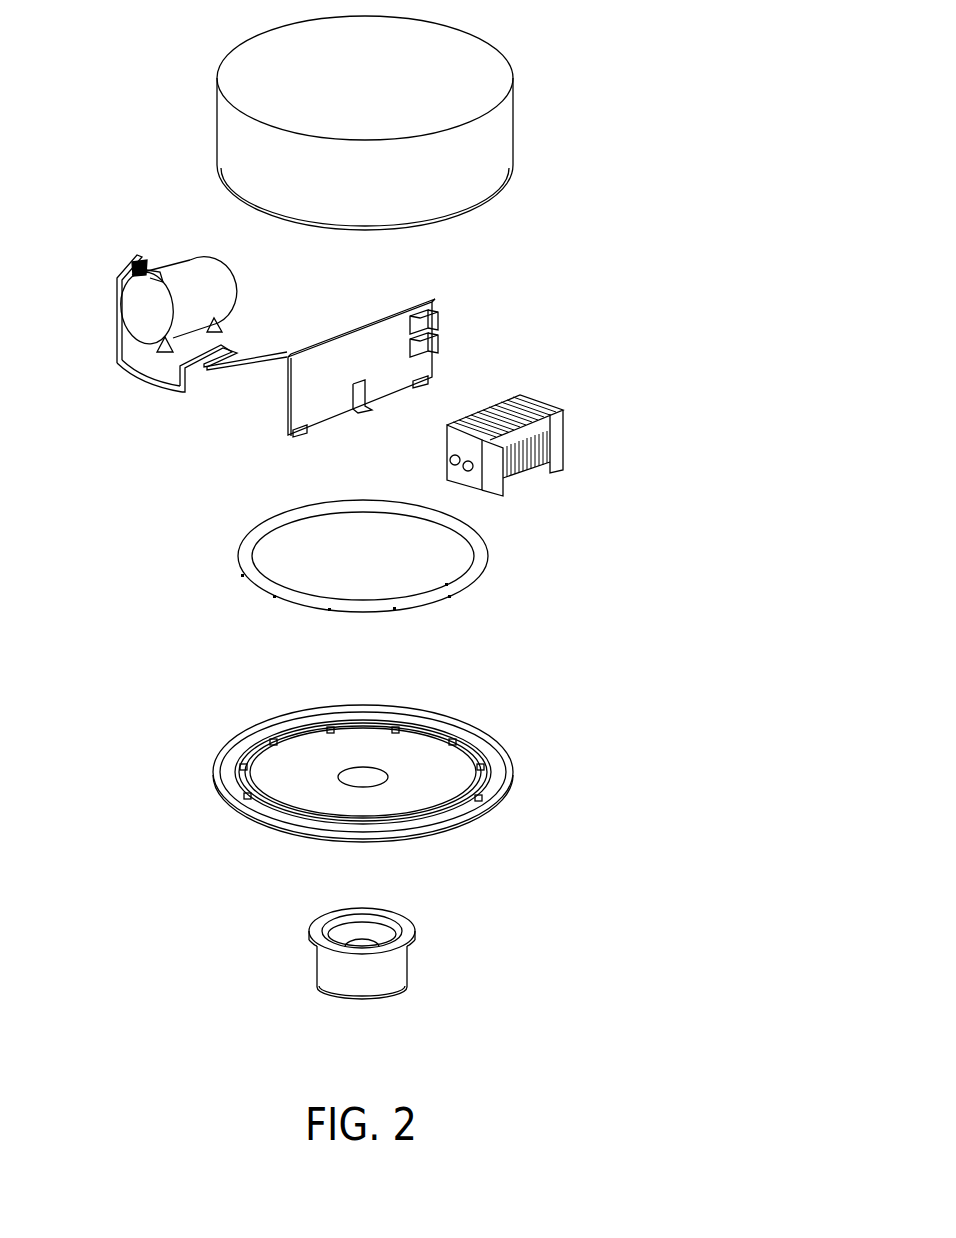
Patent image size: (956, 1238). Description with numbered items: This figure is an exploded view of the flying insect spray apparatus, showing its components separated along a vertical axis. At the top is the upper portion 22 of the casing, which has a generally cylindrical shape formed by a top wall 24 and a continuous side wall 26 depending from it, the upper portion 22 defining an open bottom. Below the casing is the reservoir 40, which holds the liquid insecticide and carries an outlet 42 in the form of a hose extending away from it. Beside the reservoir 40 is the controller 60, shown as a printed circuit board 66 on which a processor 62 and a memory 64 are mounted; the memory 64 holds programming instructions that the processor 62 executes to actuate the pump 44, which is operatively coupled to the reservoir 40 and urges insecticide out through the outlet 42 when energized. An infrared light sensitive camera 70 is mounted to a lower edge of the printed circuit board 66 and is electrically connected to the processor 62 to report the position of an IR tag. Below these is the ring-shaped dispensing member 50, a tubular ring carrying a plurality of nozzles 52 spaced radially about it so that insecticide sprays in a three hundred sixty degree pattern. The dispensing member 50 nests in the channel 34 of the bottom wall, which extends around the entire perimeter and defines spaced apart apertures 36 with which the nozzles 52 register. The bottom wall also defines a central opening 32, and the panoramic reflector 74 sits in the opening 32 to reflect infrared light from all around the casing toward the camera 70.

The upper portion 22 is at (430, 121).
The top wall 24 is at (390, 76).
The side wall 26 is at (503, 160).
The reservoir 40 is at (147, 282).
The outlet 42 is at (128, 270).
The controller 60 is at (418, 344).
The printed circuit board 66 is at (361, 364).
The processor 62 is at (439, 320).
The memory 64 is at (439, 345).
The infrared light sensitive camera 70 is at (392, 409).
The pump 44 is at (563, 417).
The dispensing member 50 is at (329, 579).
The nozzles 52 is at (352, 616).
The opening 32 is at (380, 786).
The channel 34 is at (407, 763).
The apertures 36 is at (273, 742).
The panoramic reflector 74 is at (402, 967).